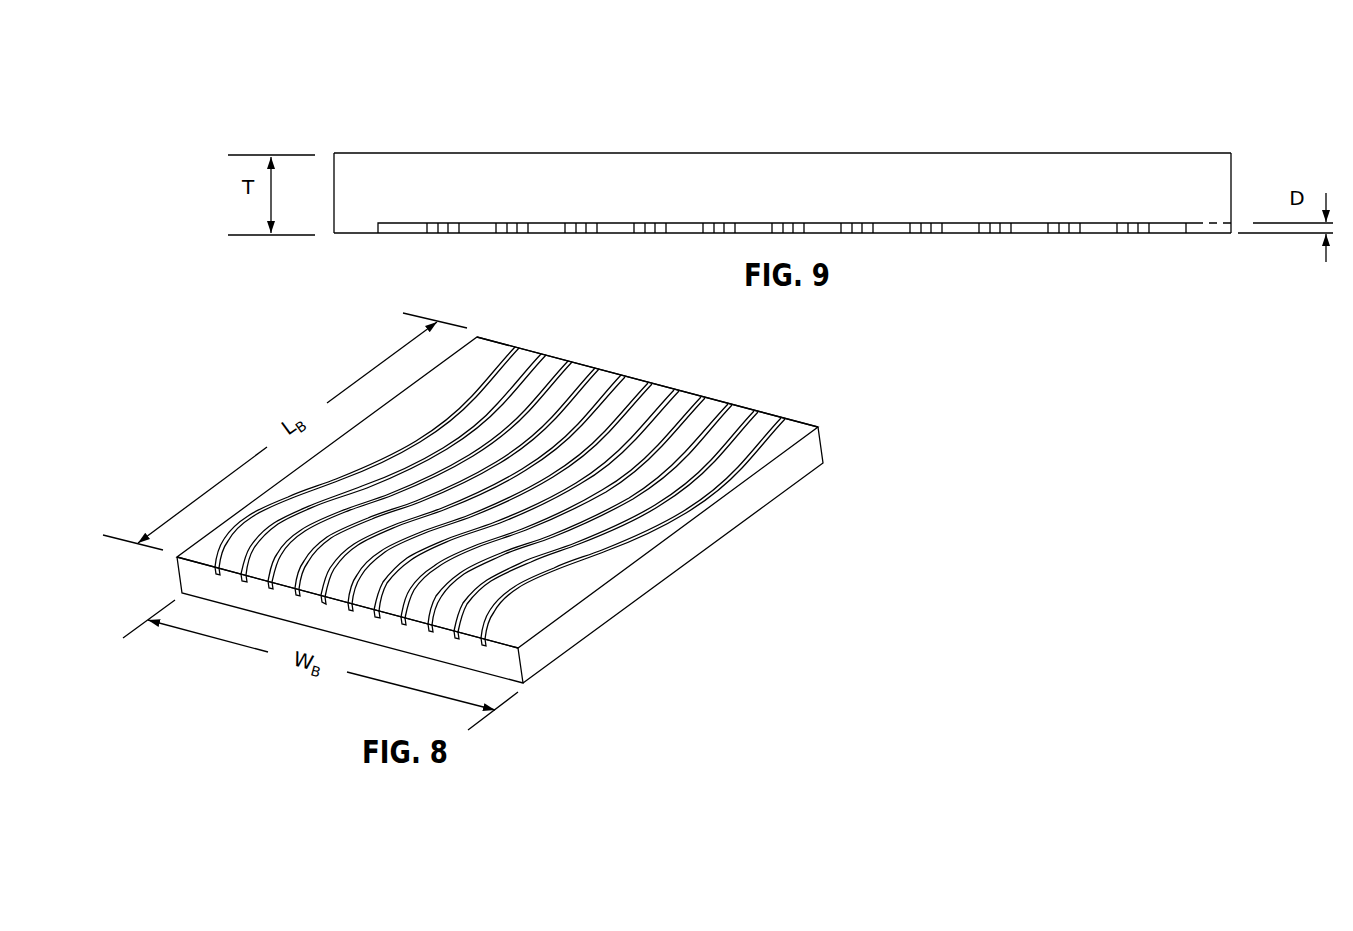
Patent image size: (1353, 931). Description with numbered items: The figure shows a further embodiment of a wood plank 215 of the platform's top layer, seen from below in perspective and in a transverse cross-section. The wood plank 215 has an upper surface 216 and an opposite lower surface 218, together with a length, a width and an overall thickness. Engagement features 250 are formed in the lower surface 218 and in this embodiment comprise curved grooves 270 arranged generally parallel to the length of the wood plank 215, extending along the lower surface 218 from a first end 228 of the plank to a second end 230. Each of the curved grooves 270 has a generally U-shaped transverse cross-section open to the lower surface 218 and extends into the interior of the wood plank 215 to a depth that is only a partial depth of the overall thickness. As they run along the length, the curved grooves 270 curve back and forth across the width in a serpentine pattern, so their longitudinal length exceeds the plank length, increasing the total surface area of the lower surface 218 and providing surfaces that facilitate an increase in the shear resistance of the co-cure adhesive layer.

In FIG. 9, the wood plank 215 is at (1088, 118).
In FIG. 8, the wood plank 215 is at (646, 626).
In FIG. 9, the upper surface 216 is at (410, 150).
In FIG. 9, the lower surface 218 is at (360, 238).
In FIG. 8, the lower surface 218 is at (590, 571).
In FIG. 8, the first end 228 is at (428, 641).
In FIG. 8, the second end 230 is at (764, 413).
In FIG. 9, the engagement features 250 is at (521, 238).
In FIG. 8, the engagement features 250 is at (657, 369).
In FIG. 9, the curved grooves 270 is at (985, 236).
In FIG. 8, the curved grooves 270 is at (610, 392).